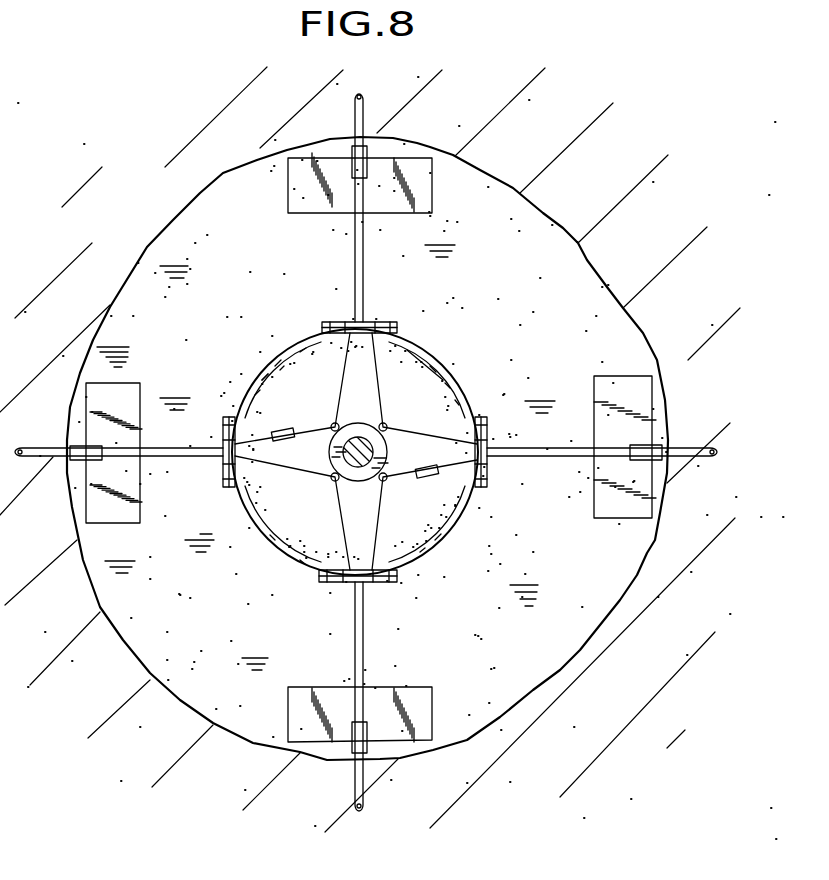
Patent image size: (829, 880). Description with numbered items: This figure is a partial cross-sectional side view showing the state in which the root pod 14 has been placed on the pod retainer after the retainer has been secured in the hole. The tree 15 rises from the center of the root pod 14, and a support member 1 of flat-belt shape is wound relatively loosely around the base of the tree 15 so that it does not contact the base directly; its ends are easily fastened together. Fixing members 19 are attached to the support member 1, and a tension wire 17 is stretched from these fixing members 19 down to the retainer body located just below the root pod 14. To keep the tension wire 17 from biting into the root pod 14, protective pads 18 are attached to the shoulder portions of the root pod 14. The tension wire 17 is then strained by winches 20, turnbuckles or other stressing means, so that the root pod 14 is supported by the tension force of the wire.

The support member 1 is at (386, 445).
The root pod 14 is at (287, 498).
The tree 15 is at (364, 466).
The tension wire 17 is at (377, 379).
The protective pad 18 is at (320, 322).
The fixing member 19 is at (331, 425).
The winch 20 is at (280, 436).